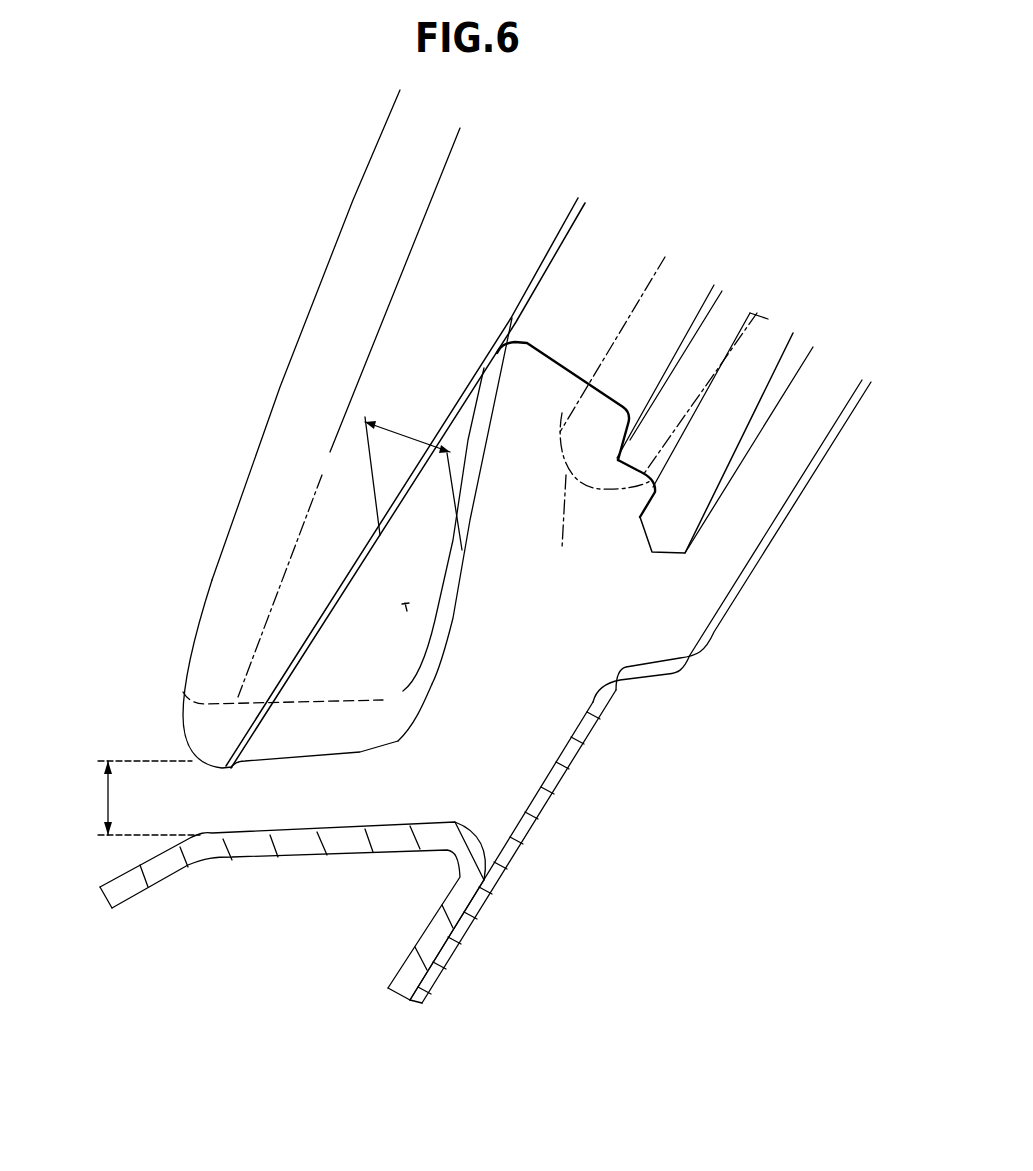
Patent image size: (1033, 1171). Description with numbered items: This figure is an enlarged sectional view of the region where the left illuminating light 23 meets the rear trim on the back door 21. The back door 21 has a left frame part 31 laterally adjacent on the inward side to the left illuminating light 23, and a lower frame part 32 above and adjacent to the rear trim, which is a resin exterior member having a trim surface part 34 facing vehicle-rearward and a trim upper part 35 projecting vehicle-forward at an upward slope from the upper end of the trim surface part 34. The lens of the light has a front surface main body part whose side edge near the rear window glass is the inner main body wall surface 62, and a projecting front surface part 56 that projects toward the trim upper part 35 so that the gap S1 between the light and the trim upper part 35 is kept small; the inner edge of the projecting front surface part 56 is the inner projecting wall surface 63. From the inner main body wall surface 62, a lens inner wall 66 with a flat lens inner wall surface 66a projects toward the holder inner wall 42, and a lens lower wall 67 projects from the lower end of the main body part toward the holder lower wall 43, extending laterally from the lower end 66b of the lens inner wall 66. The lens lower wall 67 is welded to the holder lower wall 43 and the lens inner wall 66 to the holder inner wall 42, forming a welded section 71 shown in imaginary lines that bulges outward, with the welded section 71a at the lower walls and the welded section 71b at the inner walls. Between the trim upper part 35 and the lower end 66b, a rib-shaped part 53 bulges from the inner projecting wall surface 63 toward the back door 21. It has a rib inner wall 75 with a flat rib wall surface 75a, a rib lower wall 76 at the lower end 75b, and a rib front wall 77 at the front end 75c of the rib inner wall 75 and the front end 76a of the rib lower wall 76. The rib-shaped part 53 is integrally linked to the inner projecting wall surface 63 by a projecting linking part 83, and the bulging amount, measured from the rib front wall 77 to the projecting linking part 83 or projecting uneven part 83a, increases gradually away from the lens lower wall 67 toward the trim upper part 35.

The back door 21 is at (705, 577).
The left illuminating light 23 is at (327, 270).
The left frame part 31 is at (752, 446).
The lower frame part 32 is at (552, 771).
The trim surface part 34 is at (115, 878).
The trim upper part 35 is at (373, 822).
The holder inner wall 42 is at (727, 317).
The holder lower wall 43 is at (625, 490).
The rib-shaped part 53 is at (452, 645).
The projecting front surface part 56 is at (283, 442).
The inner main body wall surface 62 is at (500, 224).
The inner projecting wall surface 63 is at (335, 515).
The lens inner wall 66 is at (610, 248).
The lens inner wall surface 66a is at (631, 263).
The lower end of the lens inner wall 66b is at (613, 392).
The lens lower wall 67 is at (565, 377).
The welded section 71 is at (755, 314).
The welded section of the lens lower wall and holder lower wall 71a is at (586, 528).
The welded section of the lens inner wall and holder inner wall 71b is at (733, 347).
The rib inner wall 75 is at (405, 578).
The rib wall surface 75a is at (406, 606).
The lower end of the rib inner wall 75b is at (358, 743).
The front end of the rib inner wall 75c is at (458, 559).
The rib lower wall 76 is at (323, 757).
The front end of the rib lower wall 76a is at (410, 733).
The rib front wall 77 is at (470, 520).
The projecting linking part 83 is at (352, 565).
The projecting uneven part 83a is at (334, 624).
The gap S1 is at (108, 795).